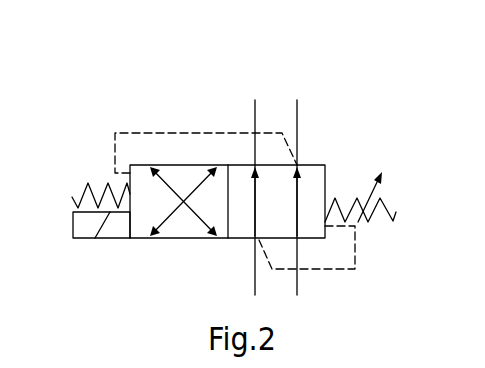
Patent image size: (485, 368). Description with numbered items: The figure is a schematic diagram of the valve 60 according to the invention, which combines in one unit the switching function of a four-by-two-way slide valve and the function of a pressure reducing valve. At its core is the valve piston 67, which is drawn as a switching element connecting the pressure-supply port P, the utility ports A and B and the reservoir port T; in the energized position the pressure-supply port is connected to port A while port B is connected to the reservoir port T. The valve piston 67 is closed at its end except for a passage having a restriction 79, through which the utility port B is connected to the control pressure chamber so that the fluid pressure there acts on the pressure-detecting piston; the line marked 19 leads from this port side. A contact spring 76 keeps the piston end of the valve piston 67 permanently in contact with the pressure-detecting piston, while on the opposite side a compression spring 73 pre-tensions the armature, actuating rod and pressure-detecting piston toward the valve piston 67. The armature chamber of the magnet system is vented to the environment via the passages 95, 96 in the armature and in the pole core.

The valve 60 is at (181, 104).
The restriction 79 is at (147, 131).
The working line B 19 is at (297, 122).
The valve piston 67 is at (255, 238).
The contact spring 76 is at (103, 190).
The compression spring 73 is at (387, 202).
The passage 95 is at (354, 276).
The passage 96 is at (355, 247).